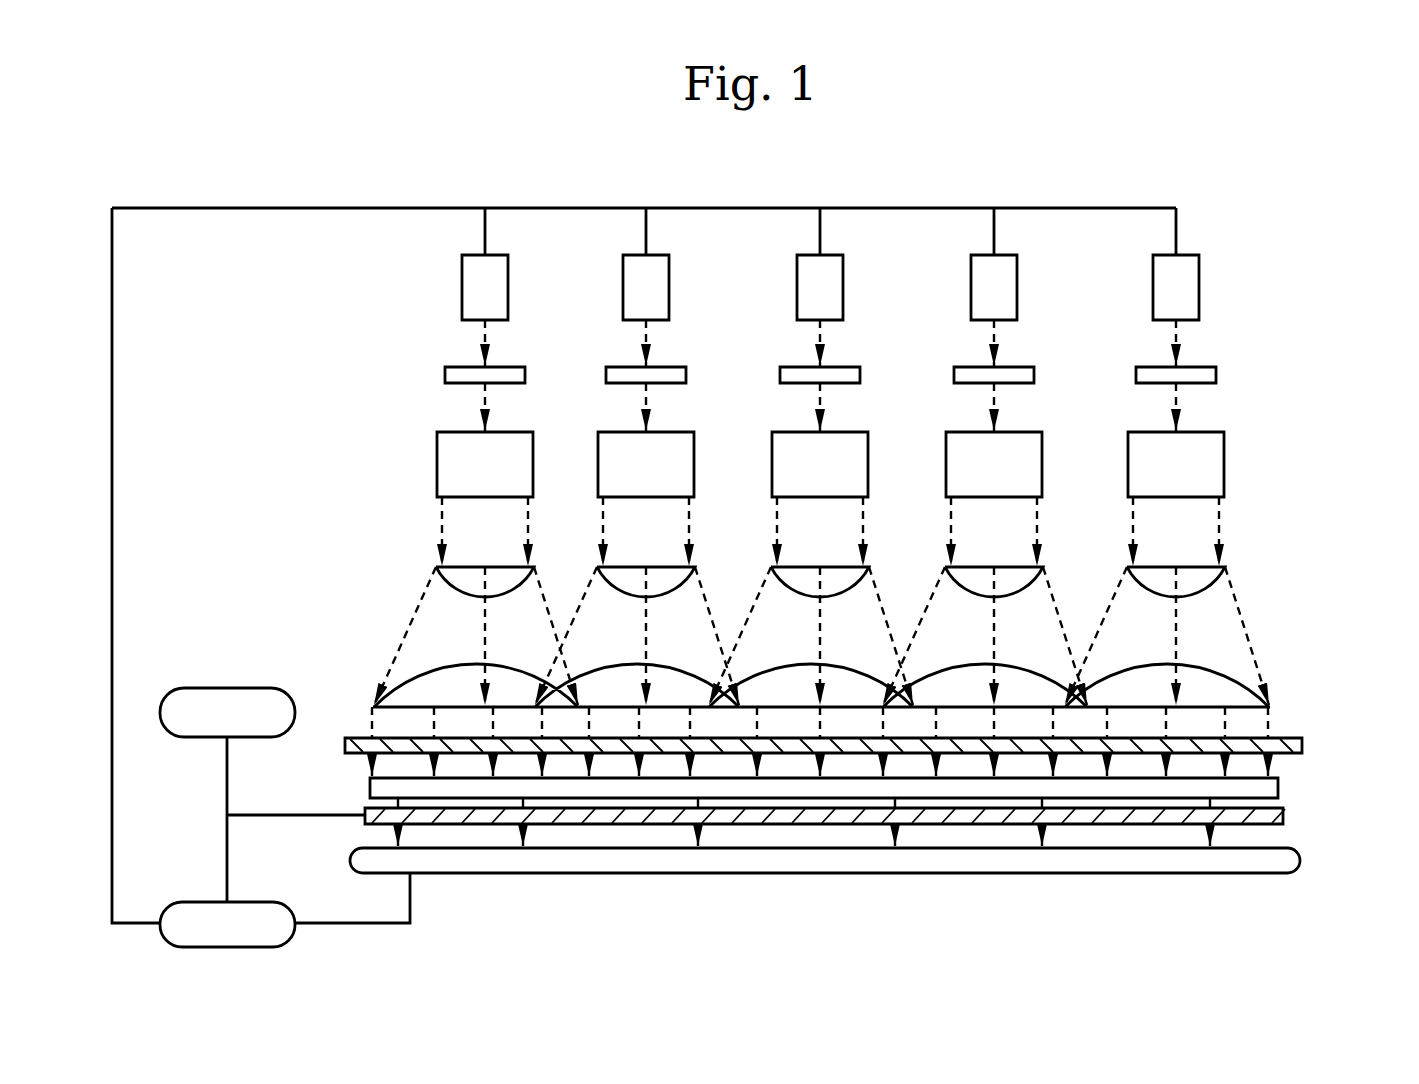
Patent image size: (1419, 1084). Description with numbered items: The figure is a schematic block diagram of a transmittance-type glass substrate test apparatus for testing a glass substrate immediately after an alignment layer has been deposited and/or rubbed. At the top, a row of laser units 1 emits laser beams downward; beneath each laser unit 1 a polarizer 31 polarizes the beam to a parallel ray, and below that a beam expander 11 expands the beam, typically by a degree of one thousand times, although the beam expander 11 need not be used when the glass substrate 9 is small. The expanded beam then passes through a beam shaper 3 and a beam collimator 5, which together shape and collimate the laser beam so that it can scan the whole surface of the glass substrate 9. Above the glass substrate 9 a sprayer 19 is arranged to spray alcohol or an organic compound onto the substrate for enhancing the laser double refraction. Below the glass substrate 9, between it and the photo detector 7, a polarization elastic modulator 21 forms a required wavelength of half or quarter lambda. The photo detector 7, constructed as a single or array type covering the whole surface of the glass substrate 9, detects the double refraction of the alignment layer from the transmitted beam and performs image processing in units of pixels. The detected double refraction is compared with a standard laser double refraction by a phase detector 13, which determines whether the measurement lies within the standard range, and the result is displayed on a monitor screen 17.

The laser unit 1 is at (1216, 292).
The polarizer 31 is at (1230, 372).
The beam expander 11 is at (1255, 490).
The beam shaper 3 is at (1253, 592).
The beam collimator 5 is at (1290, 685).
The sprayer 19 is at (1302, 745).
The glass substrate 9 is at (1278, 787).
The polarization elastic modulator 21 is at (1283, 817).
The photo detector 7 is at (1310, 867).
The monitor screen 17 is at (237, 688).
The phase detector 13 is at (200, 902).